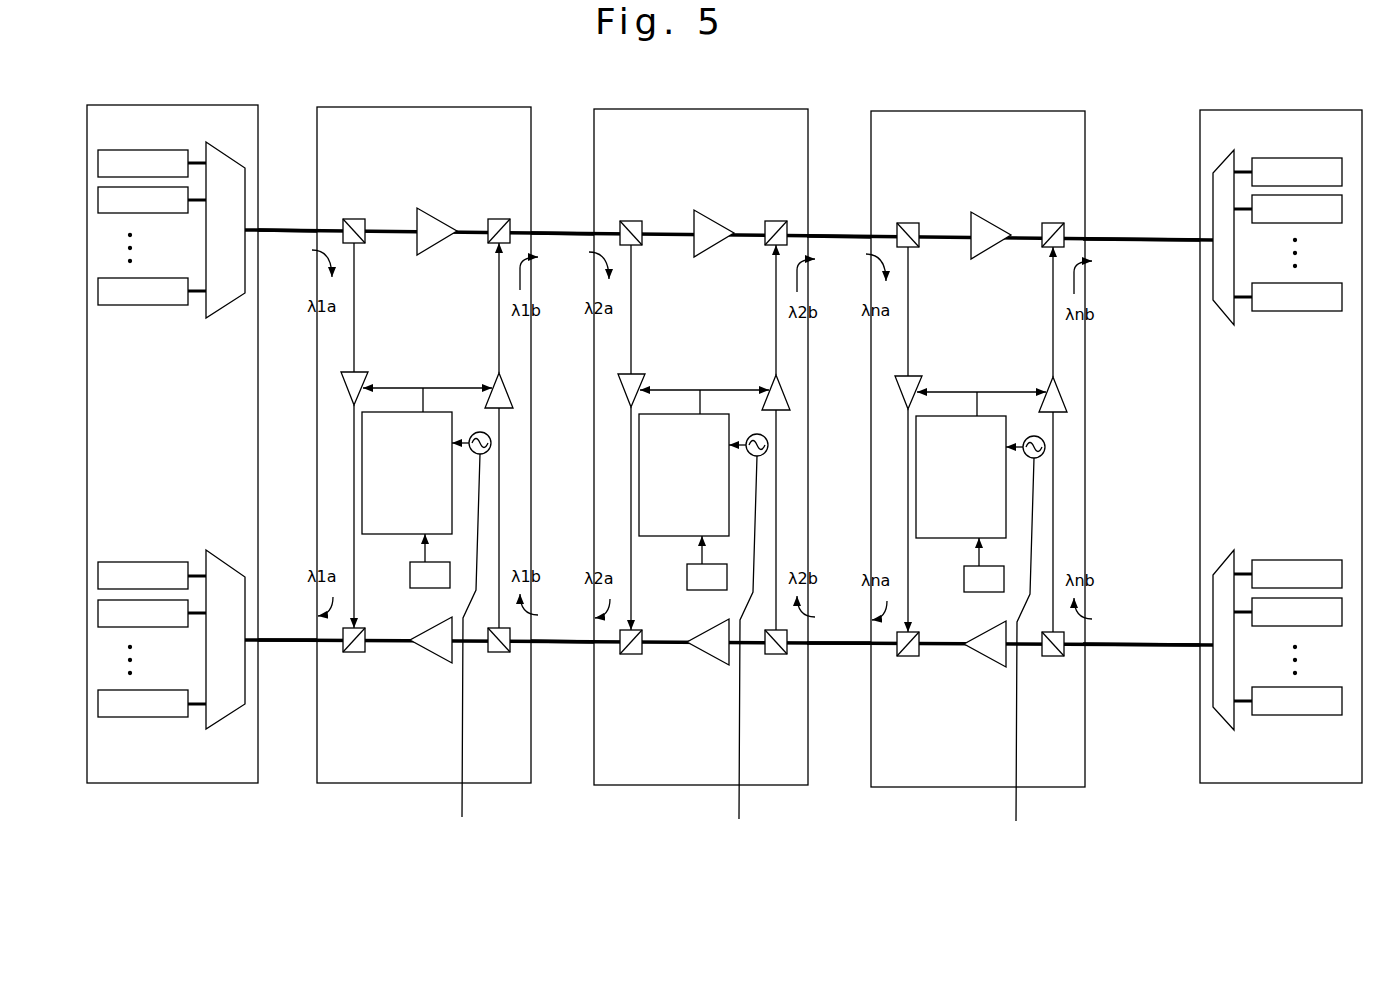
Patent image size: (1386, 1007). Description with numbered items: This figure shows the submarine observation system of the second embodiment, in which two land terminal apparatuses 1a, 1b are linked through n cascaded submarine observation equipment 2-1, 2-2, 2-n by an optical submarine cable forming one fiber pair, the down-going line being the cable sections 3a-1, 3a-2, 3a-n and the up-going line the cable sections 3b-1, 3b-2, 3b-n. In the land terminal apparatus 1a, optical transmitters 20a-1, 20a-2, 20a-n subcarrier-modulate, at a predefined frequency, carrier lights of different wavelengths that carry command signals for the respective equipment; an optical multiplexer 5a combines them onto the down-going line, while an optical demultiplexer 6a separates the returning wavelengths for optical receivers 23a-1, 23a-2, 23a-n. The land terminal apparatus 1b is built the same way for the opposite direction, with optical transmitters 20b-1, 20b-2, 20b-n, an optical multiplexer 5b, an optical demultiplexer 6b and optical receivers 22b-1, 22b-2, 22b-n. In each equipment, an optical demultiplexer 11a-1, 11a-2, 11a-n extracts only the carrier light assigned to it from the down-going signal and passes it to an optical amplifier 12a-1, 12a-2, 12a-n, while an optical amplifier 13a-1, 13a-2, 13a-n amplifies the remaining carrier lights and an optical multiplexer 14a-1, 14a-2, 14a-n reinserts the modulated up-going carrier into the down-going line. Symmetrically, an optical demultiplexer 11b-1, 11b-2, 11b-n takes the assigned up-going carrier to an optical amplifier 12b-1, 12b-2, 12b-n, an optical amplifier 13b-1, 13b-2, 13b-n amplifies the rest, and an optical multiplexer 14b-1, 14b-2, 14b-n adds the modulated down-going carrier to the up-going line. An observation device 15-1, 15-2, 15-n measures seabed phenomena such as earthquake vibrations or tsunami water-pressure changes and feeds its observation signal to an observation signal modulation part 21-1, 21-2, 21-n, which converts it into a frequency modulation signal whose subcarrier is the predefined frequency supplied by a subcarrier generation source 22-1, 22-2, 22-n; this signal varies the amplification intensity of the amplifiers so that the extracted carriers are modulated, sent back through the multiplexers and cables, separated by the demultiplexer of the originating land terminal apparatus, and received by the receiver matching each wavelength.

The land terminal apparatus 1a is at (140, 105).
The land terminal apparatus 1b is at (1220, 110).
The submarine observation equipment 2-1 is at (428, 107).
The submarine observation equipment 2-2 is at (701, 421).
The submarine observation equipment 2-n is at (978, 423).
The optical submarine cable 3a-1 is at (278, 229).
The optical submarine cable 3a-2 is at (555, 232).
The optical submarine cable 3a-n is at (832, 235).
The optical submarine cable 3b-1 is at (300, 644).
The optical submarine cable 3b-2 is at (572, 645).
The optical submarine cable 3b-n is at (850, 646).
The optical multiplexer 5a is at (226, 305).
The optical multiplexer 5b is at (1228, 555).
The optical demultiplexer 6a is at (226, 560).
The optical demultiplexer 6b is at (1225, 315).
The optical demultiplexer 11a-1 is at (348, 219).
The optical demultiplexer 11a-2 is at (640, 210).
The optical demultiplexer 11a-n is at (917, 212).
The optical demultiplexer 11b-1 is at (497, 655).
The optical demultiplexer 11b-2 is at (778, 668).
The optical demultiplexer 11b-n is at (1055, 670).
The optical amplifier 12a-1 is at (361, 372).
The optical amplifier 12a-2 is at (654, 437).
The optical amplifier 12a-n is at (931, 439).
The optical amplifier 12b-1 is at (493, 377).
The optical amplifier 12b-2 is at (748, 437).
The optical amplifier 12b-n is at (1025, 439).
The optical amplifier 13a-1 is at (430, 220).
The optical amplifier 13a-2 is at (720, 201).
The optical amplifier 13a-n is at (997, 203).
The optical amplifier 13b-1 is at (428, 662).
The optical amplifier 13b-2 is at (707, 686).
The optical amplifier 13b-n is at (984, 688).
The optical multiplexer 14a-1 is at (498, 219).
The optical multiplexer 14a-2 is at (774, 205).
The optical multiplexer 14a-n is at (1051, 207).
The optical multiplexer 14b-1 is at (352, 655).
The optical multiplexer 14b-2 is at (633, 667).
The optical multiplexer 14b-n is at (910, 669).
The observation device 15-1 is at (410, 582).
The observation device 15-2 is at (685, 579).
The observation device 15-n is at (962, 581).
The optical transmitter 20a-1 is at (112, 150).
The optical transmitter 20a-2 is at (170, 213).
The optical transmitter 20a-n is at (170, 305).
The optical transmitter 20b-1 is at (1275, 560).
The optical transmitter 20b-2 is at (1328, 628).
The optical transmitter 20b-n is at (1325, 717).
The observation signal modulation part 21-1 is at (393, 535).
The observation signal modulation part 21-2 is at (684, 498).
The observation signal modulation part 21-n is at (961, 500).
The subcarrier generation source (frequency signal generation part) 22-1 is at (345, 652).
The subcarrier generation source (frequency signal generation part) 22-2 is at (770, 653).
The subcarrier generation source (frequency signal generation part) 22-n is at (1186, 654).
The optical receiver 22b-1 is at (1272, 158).
The optical receiver 22b-2 is at (1328, 223).
The optical receiver 22b-n is at (1325, 312).
The optical receiver 23a-1 is at (112, 562).
The optical receiver 23a-2 is at (172, 628).
The optical receiver 23a-n is at (172, 718).